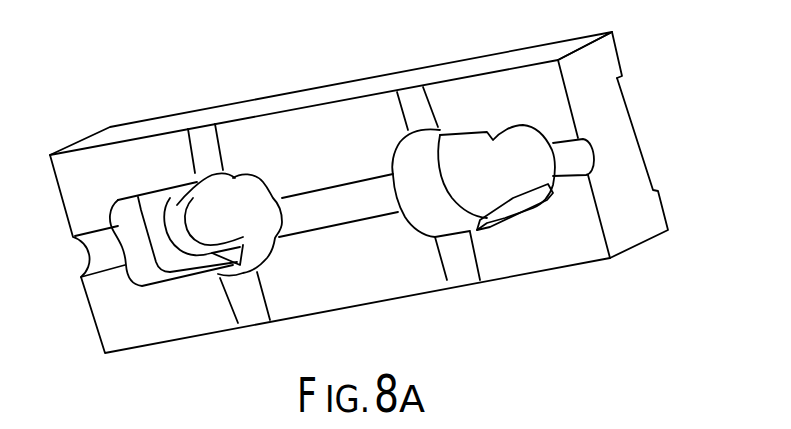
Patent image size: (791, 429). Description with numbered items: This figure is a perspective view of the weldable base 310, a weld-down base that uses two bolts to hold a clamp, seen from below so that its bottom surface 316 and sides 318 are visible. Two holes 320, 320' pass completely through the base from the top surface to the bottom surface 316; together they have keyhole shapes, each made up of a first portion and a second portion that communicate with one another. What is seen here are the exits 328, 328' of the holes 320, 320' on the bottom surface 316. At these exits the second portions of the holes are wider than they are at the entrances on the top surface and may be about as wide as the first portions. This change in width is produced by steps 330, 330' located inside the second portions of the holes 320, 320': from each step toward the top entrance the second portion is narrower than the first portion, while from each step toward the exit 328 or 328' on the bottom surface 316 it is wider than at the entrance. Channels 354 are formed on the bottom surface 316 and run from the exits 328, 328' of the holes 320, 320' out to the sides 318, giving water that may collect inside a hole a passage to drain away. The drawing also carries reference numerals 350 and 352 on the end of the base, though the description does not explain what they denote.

The weldable base 310 is at (365, 186).
The bottom surface 316 is at (123, 313).
The sides 318 is at (503, 62).
The hole 320 is at (259, 210).
The hole 320' is at (404, 183).
The exit 328 is at (192, 211).
The exit 328' is at (516, 162).
The step 330 is at (167, 228).
The step 330' is at (515, 219).
The end plate 350 is at (630, 145).
The tab 352 is at (623, 62).
The channels 354 is at (206, 143).